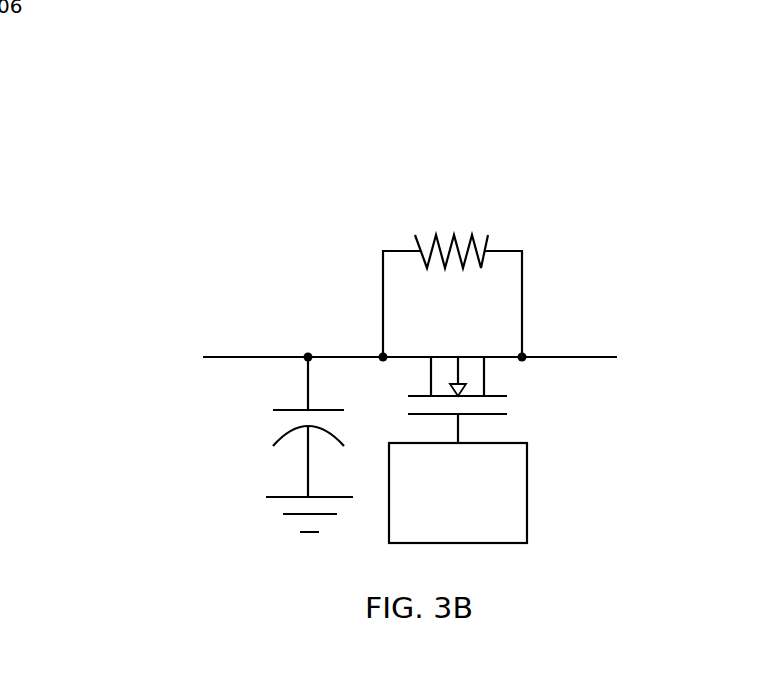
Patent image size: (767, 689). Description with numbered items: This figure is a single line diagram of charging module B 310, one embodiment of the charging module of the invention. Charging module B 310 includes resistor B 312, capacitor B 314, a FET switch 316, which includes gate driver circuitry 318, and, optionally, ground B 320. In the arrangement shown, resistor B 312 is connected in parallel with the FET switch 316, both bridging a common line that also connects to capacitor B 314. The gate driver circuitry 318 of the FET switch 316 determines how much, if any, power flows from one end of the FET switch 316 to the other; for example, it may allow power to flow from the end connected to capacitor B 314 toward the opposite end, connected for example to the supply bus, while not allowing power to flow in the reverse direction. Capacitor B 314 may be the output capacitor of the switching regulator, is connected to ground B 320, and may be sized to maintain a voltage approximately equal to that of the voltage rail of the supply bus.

The charging module B 310 is at (512, 140).
The resistor B 312 is at (382, 221).
The capacitor B 314 is at (270, 418).
The FET switch 316 is at (518, 410).
The gate driver circuitry 318 is at (479, 531).
The ground B 320 is at (267, 518).